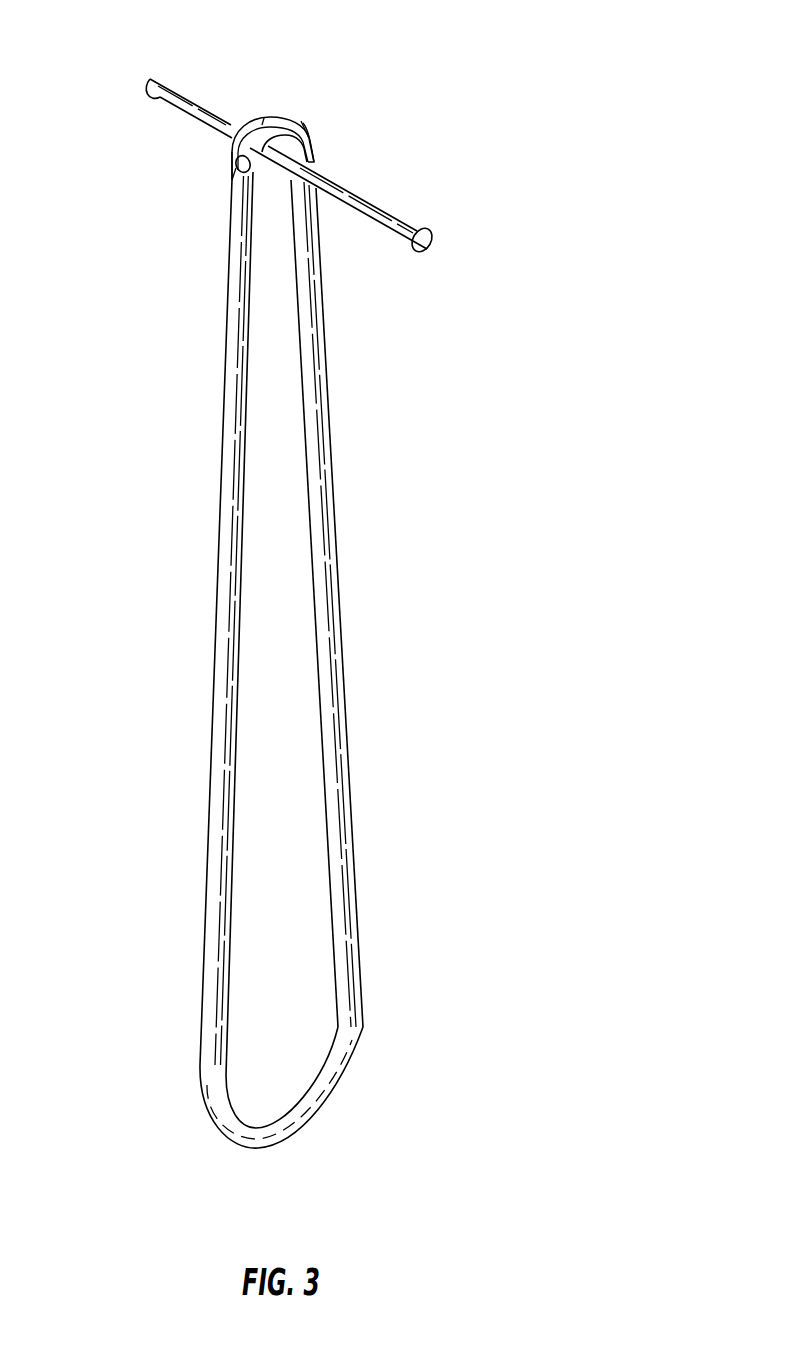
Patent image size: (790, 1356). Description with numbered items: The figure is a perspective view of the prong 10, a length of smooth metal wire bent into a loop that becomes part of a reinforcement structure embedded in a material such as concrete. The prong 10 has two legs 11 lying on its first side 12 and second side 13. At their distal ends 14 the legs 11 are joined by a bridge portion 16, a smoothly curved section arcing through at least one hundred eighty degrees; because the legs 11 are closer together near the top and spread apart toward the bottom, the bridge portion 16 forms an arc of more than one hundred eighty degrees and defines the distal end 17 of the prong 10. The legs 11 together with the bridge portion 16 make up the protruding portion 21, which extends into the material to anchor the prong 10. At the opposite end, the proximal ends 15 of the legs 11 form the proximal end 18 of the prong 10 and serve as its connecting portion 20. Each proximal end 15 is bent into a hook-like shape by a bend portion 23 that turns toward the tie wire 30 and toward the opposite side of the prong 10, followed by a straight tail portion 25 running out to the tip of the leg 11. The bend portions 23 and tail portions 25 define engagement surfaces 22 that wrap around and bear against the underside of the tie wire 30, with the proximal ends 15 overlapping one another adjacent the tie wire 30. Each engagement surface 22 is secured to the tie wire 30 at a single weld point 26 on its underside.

The prong 10 is at (147, 568).
The leg 11 is at (224, 466).
The first side 12 is at (207, 376).
The second side 13 is at (330, 408).
The distal end 14 is at (212, 986).
The proximal end 15 is at (263, 117).
The bridge portion 16 is at (302, 1118).
The distal end of the prong 17 is at (250, 1152).
The proximal end of the prong 18 is at (213, 145).
The connecting portion 20 is at (212, 163).
The protruding portion 21 is at (210, 723).
The engagement surface 22 is at (297, 177).
The bend portion 23 is at (252, 118).
The tail portion 25 is at (282, 117).
The weld point 26 is at (310, 162).
The tie wire 30 is at (427, 240).